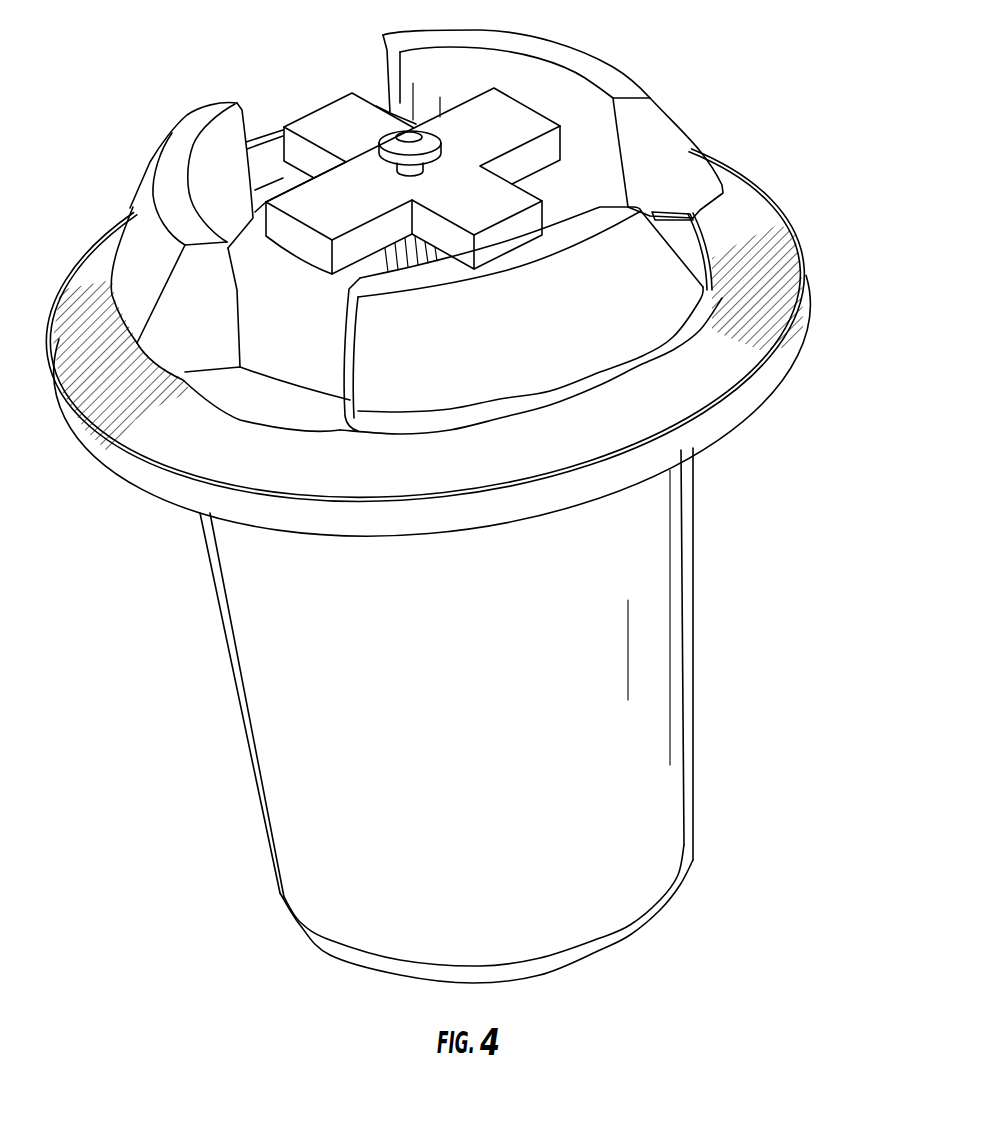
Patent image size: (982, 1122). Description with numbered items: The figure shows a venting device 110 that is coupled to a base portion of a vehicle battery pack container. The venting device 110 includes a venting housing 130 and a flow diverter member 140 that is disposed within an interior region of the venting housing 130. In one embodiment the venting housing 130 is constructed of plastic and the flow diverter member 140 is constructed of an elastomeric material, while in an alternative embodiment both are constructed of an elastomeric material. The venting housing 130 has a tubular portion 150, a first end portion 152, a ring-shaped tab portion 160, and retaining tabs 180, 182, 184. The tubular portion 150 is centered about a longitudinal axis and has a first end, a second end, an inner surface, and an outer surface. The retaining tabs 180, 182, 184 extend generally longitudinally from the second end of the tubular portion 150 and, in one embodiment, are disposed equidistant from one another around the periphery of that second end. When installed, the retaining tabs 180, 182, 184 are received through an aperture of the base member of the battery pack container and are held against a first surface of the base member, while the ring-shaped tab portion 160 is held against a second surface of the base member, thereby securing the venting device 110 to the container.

The venting device 110 is at (775, 472).
The venting housing 130 is at (803, 278).
The flow diverter member 140 is at (311, 106).
The tubular portion 150 is at (694, 611).
The first end portion 152 is at (647, 927).
The ring-shaped tab portion 160 is at (771, 194).
The retaining tab 180 is at (178, 147).
The retaining tab 182 is at (565, 45).
The retaining tab 184 is at (440, 370).